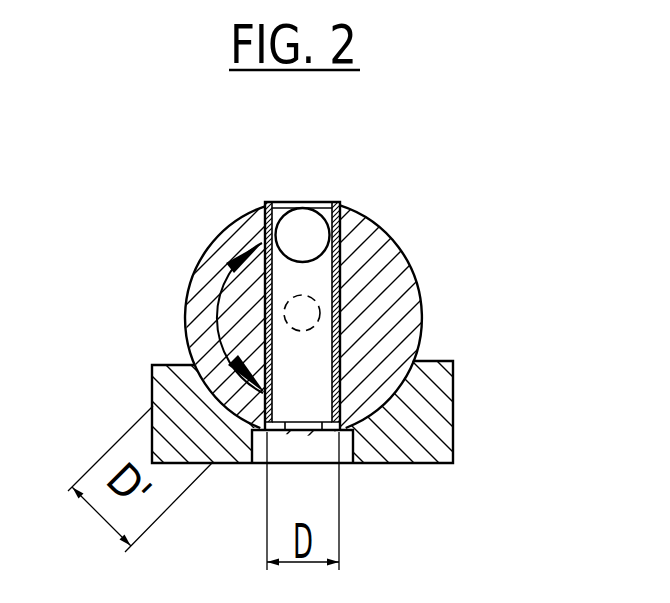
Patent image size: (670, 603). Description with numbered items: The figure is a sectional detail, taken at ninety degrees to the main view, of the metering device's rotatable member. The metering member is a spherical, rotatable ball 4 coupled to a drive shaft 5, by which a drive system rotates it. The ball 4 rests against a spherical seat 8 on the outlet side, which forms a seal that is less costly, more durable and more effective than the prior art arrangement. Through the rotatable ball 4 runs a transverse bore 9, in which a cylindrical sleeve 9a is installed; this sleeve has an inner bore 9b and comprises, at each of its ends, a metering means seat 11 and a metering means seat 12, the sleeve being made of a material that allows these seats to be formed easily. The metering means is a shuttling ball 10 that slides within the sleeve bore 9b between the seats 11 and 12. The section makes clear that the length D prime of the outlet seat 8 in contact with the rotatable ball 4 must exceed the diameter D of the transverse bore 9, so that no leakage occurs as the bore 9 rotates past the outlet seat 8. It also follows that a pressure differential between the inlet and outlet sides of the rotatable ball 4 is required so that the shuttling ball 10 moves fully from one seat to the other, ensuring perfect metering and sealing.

The ball 4 is at (388, 293).
The drive shaft 5 is at (304, 313).
The spherical seat 8 is at (417, 432).
The transverse bore 9 is at (265, 222).
The cylindrical sleeve 9a is at (268, 268).
The inner bore 9b is at (290, 357).
The shuttling ball 10 is at (294, 233).
The metering means seat 11 is at (275, 202).
The metering means seat 12 is at (332, 428).